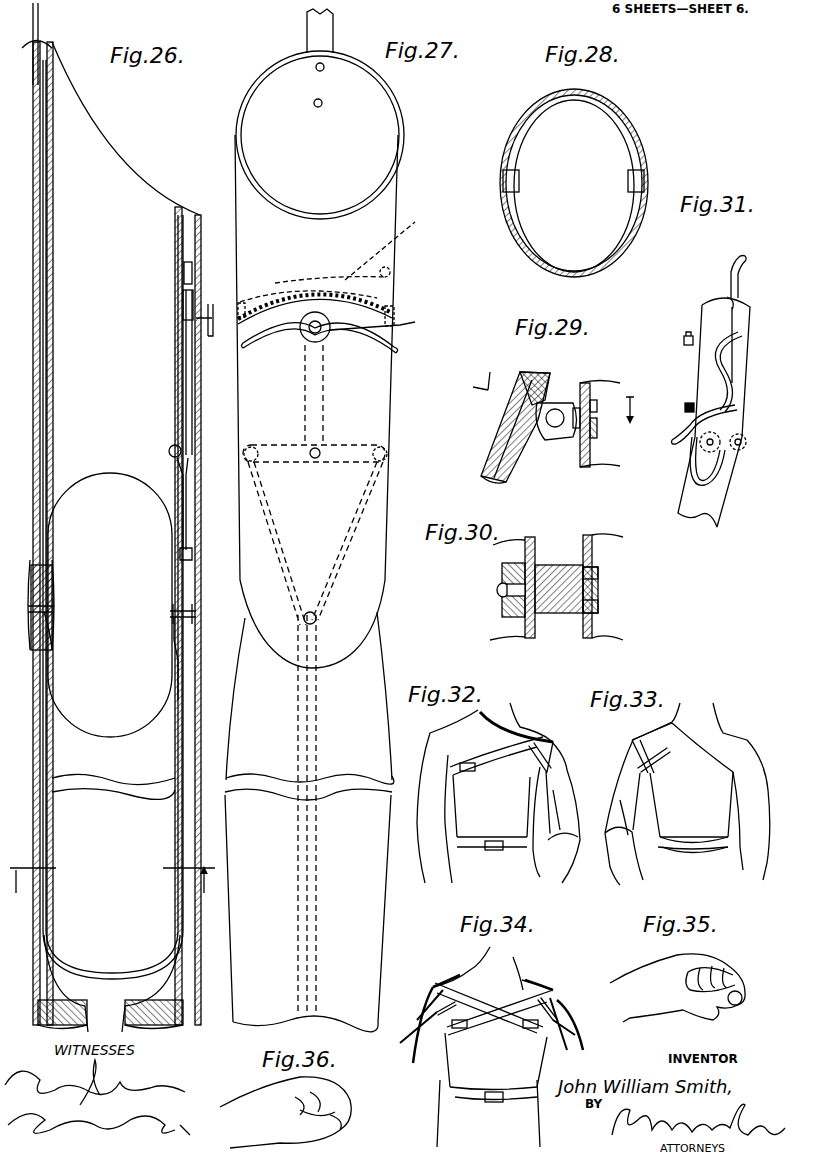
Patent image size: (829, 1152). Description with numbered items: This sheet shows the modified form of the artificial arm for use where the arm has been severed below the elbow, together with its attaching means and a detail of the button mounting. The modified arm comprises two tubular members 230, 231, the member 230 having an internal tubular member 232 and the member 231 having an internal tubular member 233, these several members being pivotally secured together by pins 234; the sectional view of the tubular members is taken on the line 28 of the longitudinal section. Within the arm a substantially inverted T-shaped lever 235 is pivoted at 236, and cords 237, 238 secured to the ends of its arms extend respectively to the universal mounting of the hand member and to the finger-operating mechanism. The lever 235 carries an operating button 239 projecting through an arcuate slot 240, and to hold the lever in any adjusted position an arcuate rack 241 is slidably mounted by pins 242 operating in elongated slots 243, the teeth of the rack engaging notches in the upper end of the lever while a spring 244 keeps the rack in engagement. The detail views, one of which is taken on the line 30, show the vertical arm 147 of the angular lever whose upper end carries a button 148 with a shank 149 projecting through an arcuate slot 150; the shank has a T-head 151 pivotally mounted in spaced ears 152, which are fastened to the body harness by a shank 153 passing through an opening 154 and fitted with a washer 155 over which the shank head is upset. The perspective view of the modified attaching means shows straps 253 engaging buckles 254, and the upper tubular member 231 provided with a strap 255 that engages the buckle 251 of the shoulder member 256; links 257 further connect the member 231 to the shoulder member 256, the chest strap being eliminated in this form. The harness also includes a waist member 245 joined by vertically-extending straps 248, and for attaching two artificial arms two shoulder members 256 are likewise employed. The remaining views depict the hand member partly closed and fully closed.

In FIG. 26, the section line 28— 28 is at (109, 891).
In FIG. 29, the section line 30— 30 is at (559, 390).
In FIG. 29, the vertical arm 147 is at (498, 433).
In FIG. 30, the vertical arm 147 is at (520, 553).
In FIG. 29, the button 148 is at (515, 378).
In FIG. 30, the button 148 is at (502, 572).
In FIG. 29, the shank 149 is at (555, 417).
In FIG. 30, the shank 149 is at (520, 610).
In FIG. 29, the arcuate slot 150 is at (537, 440).
In FIG. 29, the T-head 151 is at (573, 420).
In FIG. 30, the T-head 151 is at (555, 567).
In FIG. 29, the spaced ears 152 is at (592, 403).
In FIG. 30, the spaced ears 152 is at (587, 568).
In FIG. 29, the shank 153 is at (593, 435).
In FIG. 30, the shank 153 is at (597, 582).
In FIG. 30, the opening 154 is at (592, 603).
In FIG. 29, the washer 155 is at (597, 417).
In FIG. 30, the washer 155 is at (587, 617).
In FIG. 26, the tubular member 230 is at (190, 692).
In FIG. 28, the tubular member 230 is at (634, 228).
In FIG. 26, the tubular member 231 is at (197, 535).
In FIG. 27, the tubular member 231 is at (388, 428).
In FIG. 31, the tubular member 231 is at (742, 353).
In FIG. 32, the tubular member 231 is at (558, 806).
In FIG. 33, the tubular member 231 is at (628, 770).
In FIG. 26, the internal tubular member 232 is at (170, 828).
In FIG. 28, the internal tubular member 232 is at (520, 222).
In FIG. 26, the internal tubular member 233 is at (178, 386).
In FIG. 26, the pins 234 is at (55, 605).
In FIG. 34, the pins 234 is at (517, 1103).
In FIG. 26, the inverted T-shaped lever 235 is at (190, 376).
In FIG. 27, the inverted T-shaped lever 235 is at (318, 423).
In FIG. 26, the pivot 236 is at (170, 456).
In FIG. 27, the pivot 236 is at (314, 458).
In FIG. 26, the cord 237 is at (176, 652).
In FIG. 27, the cord 237 is at (292, 562).
In FIG. 27, the cord 238 is at (360, 550).
In FIG. 26, the operating button 239 is at (213, 322).
In FIG. 27, the operating button 239 is at (400, 326).
In FIG. 27, the arcuate slot 240 is at (396, 345).
In FIG. 26, the arcuate rack 241 is at (185, 310).
In FIG. 27, the arcuate rack 241 is at (398, 290).
In FIG. 27, the pins 242 is at (398, 305).
In FIG. 27, the elongated slots 243 is at (410, 318).
In FIG. 26, the spring 244 is at (186, 284).
In FIG. 27, the spring 244 is at (358, 242).
In FIG. 33, the waist member 245 is at (696, 843).
In FIG. 34, the vertically-extending straps 248 is at (502, 1058).
In FIG. 32, the buckle 251 is at (552, 736).
In FIG. 33, the buckle 251 is at (648, 740).
In FIG. 34, the buckle 251 is at (433, 983).
In FIG. 31, the straps 253 is at (733, 392).
In FIG. 31, the buckles 254 is at (686, 342).
In FIG. 31, the strap 255 is at (753, 277).
In FIG. 32, the strap 255 is at (545, 753).
In FIG. 32, the shoulder member 256 is at (498, 755).
In FIG. 33, the shoulder member 256 is at (690, 753).
In FIG. 34, the shoulder member 256 is at (462, 988).
In FIG. 33, the links 257 is at (658, 760).
In FIG. 34, the links 257 is at (435, 1002).